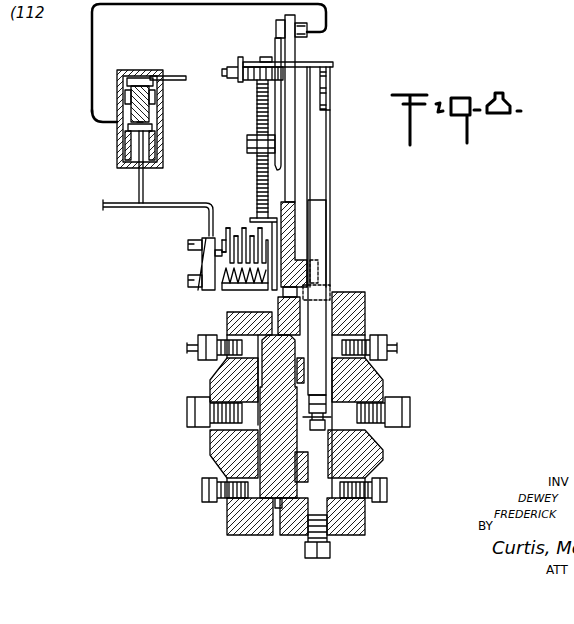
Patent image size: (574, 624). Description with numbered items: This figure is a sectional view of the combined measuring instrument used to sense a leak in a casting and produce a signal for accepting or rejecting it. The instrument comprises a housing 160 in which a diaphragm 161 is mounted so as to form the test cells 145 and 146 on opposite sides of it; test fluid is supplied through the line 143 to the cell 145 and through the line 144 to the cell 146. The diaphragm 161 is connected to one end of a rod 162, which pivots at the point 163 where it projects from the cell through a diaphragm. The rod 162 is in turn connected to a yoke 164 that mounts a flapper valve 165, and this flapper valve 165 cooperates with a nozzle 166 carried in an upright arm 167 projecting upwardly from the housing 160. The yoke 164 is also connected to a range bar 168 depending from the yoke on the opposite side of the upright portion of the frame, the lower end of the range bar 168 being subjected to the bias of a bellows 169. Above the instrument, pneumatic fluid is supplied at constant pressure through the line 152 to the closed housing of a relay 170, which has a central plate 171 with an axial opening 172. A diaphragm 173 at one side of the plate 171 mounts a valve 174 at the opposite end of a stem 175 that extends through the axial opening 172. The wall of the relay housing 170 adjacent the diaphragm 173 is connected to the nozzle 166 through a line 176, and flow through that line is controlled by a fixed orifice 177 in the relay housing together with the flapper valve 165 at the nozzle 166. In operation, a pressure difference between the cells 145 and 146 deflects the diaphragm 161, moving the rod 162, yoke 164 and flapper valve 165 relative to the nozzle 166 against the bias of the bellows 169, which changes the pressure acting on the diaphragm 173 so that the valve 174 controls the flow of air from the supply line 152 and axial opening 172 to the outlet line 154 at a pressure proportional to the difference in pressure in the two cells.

The line 143 is at (190, 421).
The line 144 is at (398, 421).
The test cell 145 is at (226, 390).
The test cell 146 is at (340, 403).
The supply line 152 is at (177, 76).
The outlet line 154 is at (115, 208).
The housing 160 is at (358, 312).
The diaphragm 161 is at (277, 452).
The rod 162 is at (318, 186).
The pivot point 163 is at (326, 288).
The yoke 164 is at (305, 65).
The flapper valve 165 is at (276, 44).
The nozzle 166 is at (280, 27).
The upright arm 167 is at (292, 154).
The range bar 168 is at (258, 106).
The bellows 169 is at (232, 223).
The relay 170 is at (120, 156).
The central plate 171 is at (146, 72).
The axial opening 172 is at (126, 138).
The diaphragm 173 is at (127, 101).
The valve 174 is at (150, 127).
The stem 175 is at (152, 106).
The line 176 is at (92, 59).
The fixed orifice 177 is at (134, 72).